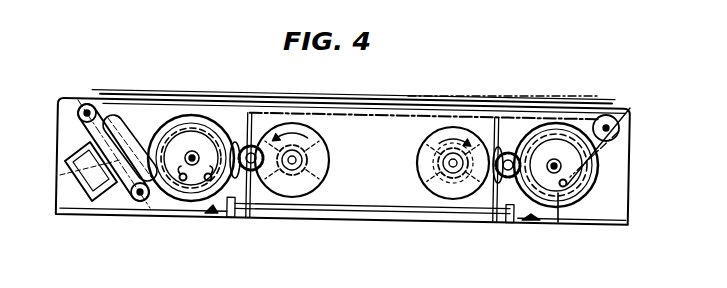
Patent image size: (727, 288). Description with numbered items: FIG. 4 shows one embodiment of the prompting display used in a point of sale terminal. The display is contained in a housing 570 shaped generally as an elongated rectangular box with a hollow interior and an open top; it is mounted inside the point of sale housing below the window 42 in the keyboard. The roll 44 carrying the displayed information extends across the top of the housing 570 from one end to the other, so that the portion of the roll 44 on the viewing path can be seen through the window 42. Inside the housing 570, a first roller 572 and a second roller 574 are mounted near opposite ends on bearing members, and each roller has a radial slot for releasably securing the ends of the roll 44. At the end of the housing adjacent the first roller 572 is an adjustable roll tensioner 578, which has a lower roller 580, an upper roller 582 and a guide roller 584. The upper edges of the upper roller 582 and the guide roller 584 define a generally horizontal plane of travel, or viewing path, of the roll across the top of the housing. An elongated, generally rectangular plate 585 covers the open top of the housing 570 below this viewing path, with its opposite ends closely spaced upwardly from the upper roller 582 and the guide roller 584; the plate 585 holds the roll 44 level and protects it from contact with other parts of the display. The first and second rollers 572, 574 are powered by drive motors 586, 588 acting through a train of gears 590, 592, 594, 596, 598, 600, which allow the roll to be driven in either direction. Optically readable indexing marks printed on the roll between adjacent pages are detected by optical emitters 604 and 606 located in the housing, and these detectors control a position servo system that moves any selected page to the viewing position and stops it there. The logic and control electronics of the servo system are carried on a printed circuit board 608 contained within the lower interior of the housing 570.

The window 42 is at (440, 97).
The roll 44 is at (210, 105).
The housing 570 is at (634, 146).
The first roller 572 is at (207, 213).
The second roller 574 is at (550, 147).
The roll tensioner 578 is at (78, 137).
The roller 580 is at (138, 201).
The upper roller 582 is at (82, 100).
The guide roller 584 is at (632, 108).
The plate 585 is at (388, 115).
The drive motor 586 is at (316, 176).
The drive motor 588 is at (433, 185).
The gear 590 is at (328, 136).
The gear 592 is at (246, 132).
The gear 594 is at (250, 222).
The gear 596 is at (430, 148).
The second gear 598 is at (503, 140).
The gear 600 is at (558, 222).
The optical emitter 604 is at (122, 118).
The optical emitter 606 is at (63, 180).
The printed circuit board 608 is at (390, 208).